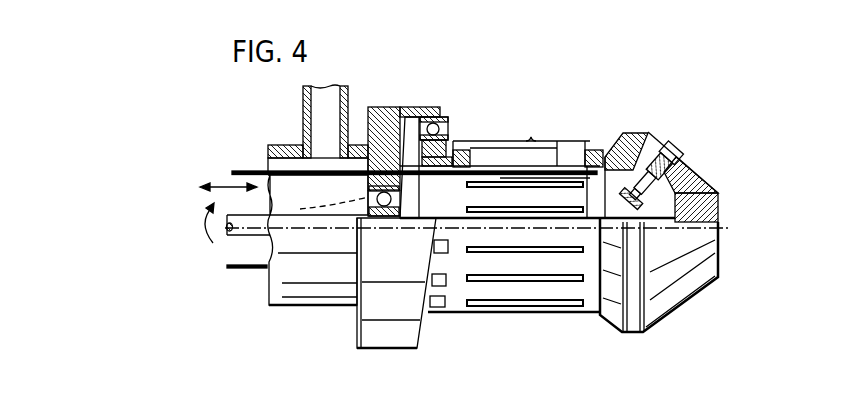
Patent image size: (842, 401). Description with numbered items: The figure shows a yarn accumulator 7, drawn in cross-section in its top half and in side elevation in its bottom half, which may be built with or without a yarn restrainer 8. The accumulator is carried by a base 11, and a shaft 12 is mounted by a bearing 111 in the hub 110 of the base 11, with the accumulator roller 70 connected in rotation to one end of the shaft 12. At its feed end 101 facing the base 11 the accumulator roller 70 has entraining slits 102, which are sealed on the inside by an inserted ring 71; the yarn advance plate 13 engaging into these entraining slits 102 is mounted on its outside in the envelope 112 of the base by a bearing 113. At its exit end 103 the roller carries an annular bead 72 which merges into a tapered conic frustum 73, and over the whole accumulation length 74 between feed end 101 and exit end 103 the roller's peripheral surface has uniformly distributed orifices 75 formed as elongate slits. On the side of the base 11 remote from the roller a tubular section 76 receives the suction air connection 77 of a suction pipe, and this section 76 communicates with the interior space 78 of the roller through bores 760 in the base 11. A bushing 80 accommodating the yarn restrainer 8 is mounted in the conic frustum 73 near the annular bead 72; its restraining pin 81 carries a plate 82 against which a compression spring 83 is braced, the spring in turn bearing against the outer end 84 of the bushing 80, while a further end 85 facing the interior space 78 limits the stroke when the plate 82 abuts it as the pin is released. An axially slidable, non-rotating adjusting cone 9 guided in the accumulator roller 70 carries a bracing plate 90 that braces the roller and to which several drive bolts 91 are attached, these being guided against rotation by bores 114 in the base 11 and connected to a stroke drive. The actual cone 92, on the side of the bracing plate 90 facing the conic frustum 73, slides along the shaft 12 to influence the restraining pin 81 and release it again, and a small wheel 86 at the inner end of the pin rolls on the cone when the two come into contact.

The yarn accumulator 7 is at (512, 131).
The yarn restrainer 8 is at (657, 137).
The adjusting cone 9 is at (618, 190).
The base 11 is at (397, 343).
The shaft 12 is at (244, 240).
The yarn advance plate 13 is at (449, 303).
The accumulator roller 70 is at (541, 313).
The inserted ring 71 is at (440, 150).
The annular bead 72 is at (635, 333).
The conic frustum 73 is at (686, 292).
The accumulation length 74 is at (531, 139).
The orifices 75 is at (518, 306).
The tubular section 76 is at (288, 275).
The suction air connection 77 is at (303, 112).
The interior space 78 is at (556, 163).
The bushing 80 is at (720, 193).
The restraining pin 81 is at (663, 147).
The plate 82 is at (693, 172).
The compression spring 83 is at (648, 146).
The outer end 84 is at (680, 157).
The further end 85 is at (720, 210).
The small wheel 86 is at (626, 196).
The bracing plate 90 is at (586, 172).
The drive bolts 91 is at (243, 170).
The cone 92 is at (600, 170).
The feed end 101 is at (452, 318).
The entraining slits 102 is at (445, 268).
The exit end 103 is at (588, 313).
The hub 110 is at (372, 200).
The bearing 111 is at (380, 216).
The envelope 112 is at (410, 107).
The bearing 113 is at (431, 122).
The bores 114 is at (360, 150).
The bores 760 is at (326, 213).